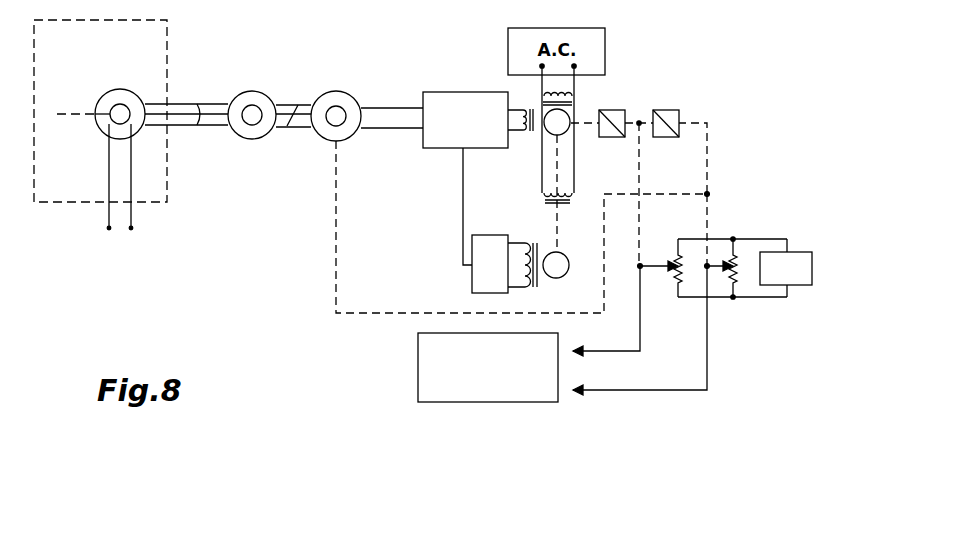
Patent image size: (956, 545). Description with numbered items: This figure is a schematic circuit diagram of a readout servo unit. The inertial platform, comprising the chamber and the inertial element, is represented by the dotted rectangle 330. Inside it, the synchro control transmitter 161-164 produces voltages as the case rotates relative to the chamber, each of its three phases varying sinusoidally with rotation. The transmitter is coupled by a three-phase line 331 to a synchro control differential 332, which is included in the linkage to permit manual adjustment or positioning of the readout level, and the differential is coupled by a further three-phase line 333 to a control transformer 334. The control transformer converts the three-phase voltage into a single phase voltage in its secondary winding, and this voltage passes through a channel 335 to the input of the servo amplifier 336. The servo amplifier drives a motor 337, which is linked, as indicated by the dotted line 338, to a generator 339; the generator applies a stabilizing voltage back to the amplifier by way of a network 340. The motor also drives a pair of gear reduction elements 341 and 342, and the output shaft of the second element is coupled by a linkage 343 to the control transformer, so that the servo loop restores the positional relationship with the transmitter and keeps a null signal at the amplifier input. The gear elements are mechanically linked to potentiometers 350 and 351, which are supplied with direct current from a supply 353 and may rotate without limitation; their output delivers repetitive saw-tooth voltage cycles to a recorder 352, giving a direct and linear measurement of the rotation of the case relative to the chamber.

The synchro control transmitter 161-164 is at (103, 92).
The dotted rectangle 330 is at (70, 203).
The three-phase line 331 is at (200, 126).
The synchro control differential 332 is at (248, 137).
The three-phase line 333 is at (297, 106).
The control transformer 334 is at (347, 138).
The channel 335 is at (378, 117).
The servo amplifier 336 is at (465, 100).
The motor 337 is at (570, 117).
The dotted line 338 is at (553, 204).
The generator 339 is at (565, 262).
The network 340 is at (504, 264).
The gear reduction element 341 is at (622, 111).
The gear reduction element 342 is at (662, 110).
The linkage 343 is at (335, 247).
The potentiometer 350 is at (677, 255).
The potentiometer 351 is at (735, 255).
The recorder 352 is at (418, 372).
The supply 353 is at (802, 286).